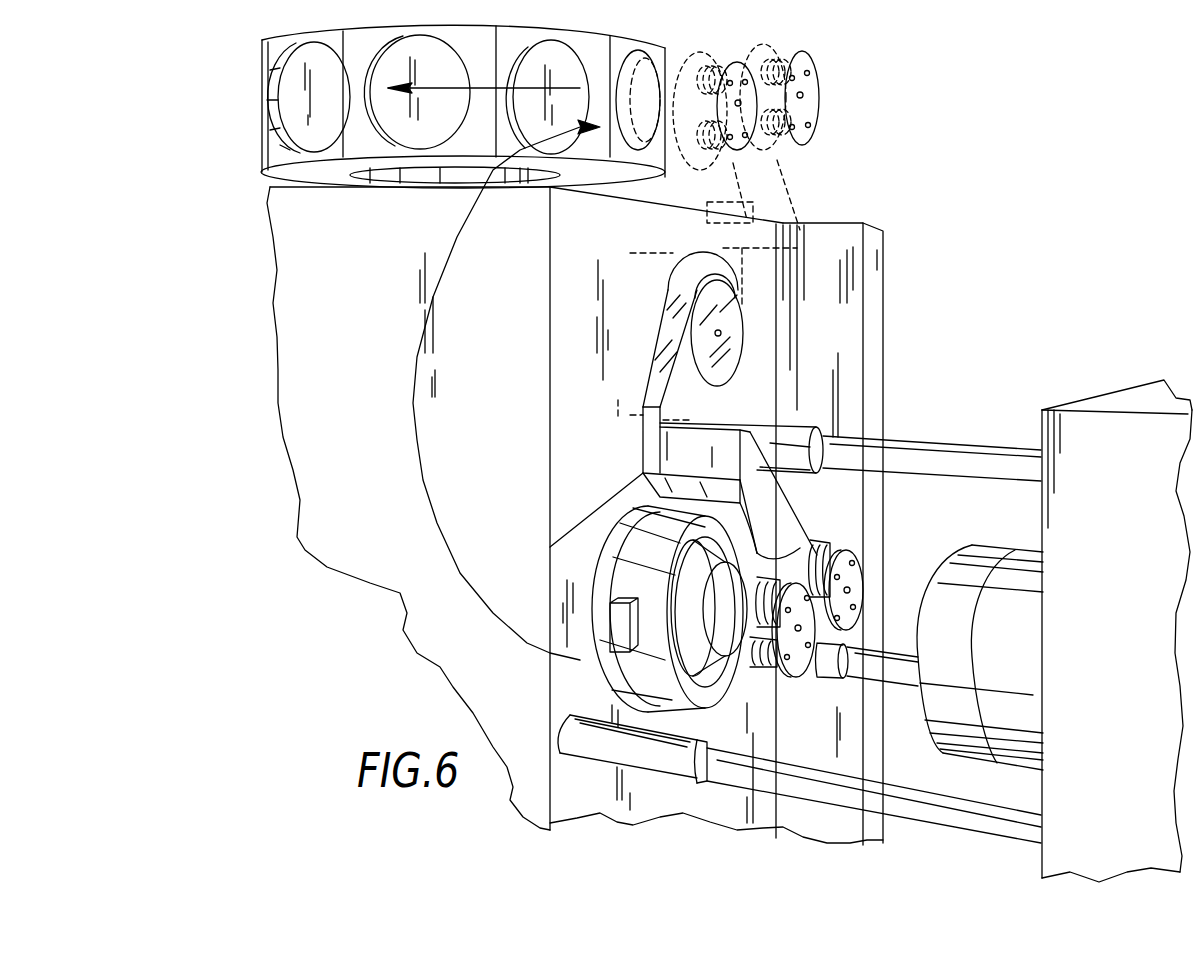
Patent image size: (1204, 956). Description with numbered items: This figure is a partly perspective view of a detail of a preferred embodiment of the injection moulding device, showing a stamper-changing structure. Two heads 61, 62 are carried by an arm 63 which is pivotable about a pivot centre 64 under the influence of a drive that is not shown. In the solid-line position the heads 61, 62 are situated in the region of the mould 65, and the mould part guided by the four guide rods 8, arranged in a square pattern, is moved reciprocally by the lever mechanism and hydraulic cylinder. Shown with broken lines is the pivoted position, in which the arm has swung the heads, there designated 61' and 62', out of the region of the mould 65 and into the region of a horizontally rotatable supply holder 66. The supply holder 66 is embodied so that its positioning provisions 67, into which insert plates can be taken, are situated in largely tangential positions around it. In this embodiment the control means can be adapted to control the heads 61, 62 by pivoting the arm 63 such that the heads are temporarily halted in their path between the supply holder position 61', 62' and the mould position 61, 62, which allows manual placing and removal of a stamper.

The guide rods 8 is at (953, 450).
The head 61 is at (863, 585).
The head (broken-line position) 61' is at (747, 113).
The head 62 is at (793, 658).
The head (broken-line position) 62' is at (802, 97).
The arm 63 is at (781, 205).
The pivot centre 64 is at (730, 337).
The mould 65 is at (734, 704).
The supply holder 66 is at (264, 57).
The positioning provisions 67 is at (401, 112).